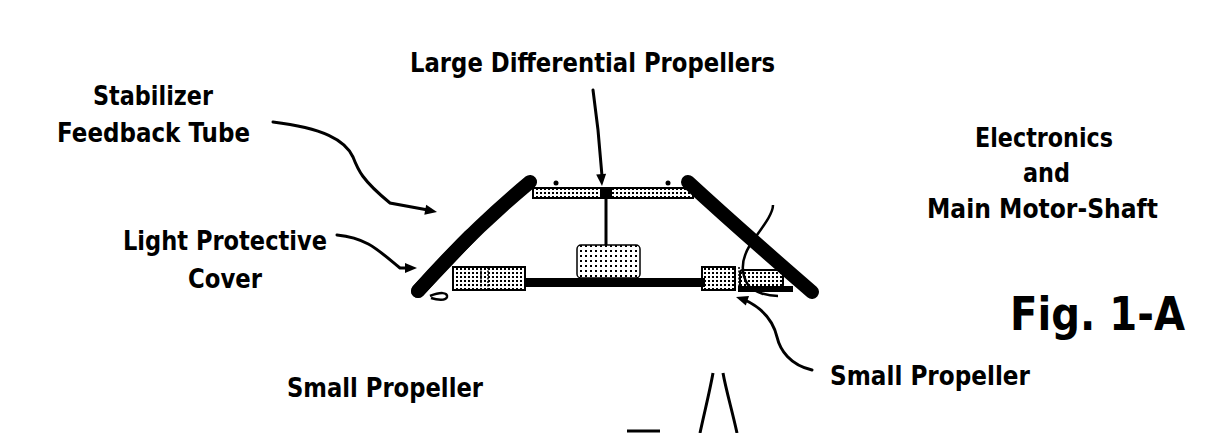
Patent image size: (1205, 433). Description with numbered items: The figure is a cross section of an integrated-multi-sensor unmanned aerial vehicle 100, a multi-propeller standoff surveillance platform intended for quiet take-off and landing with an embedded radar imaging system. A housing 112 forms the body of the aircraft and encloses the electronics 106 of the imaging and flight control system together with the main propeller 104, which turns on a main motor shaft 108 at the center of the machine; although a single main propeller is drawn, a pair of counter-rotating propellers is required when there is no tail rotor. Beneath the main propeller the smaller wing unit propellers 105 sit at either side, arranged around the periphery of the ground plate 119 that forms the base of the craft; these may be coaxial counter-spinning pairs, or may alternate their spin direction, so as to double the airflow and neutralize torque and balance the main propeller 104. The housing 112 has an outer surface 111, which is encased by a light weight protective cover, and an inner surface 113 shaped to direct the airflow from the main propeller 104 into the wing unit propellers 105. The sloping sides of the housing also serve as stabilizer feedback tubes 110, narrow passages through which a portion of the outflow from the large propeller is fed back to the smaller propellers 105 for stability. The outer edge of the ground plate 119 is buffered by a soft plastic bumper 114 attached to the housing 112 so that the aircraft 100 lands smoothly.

The unmanned aerial vehicle 100 is at (370, 83).
The main propeller 104 is at (630, 185).
The wing unit propeller 105 is at (503, 290).
The electronics 106 is at (612, 229).
The main motor shaft 108 is at (773, 205).
The stabilizer feedback tube 110 is at (456, 236).
The outer surface 111 is at (640, 255).
The housing 112 is at (410, 290).
The inner surface 113 is at (770, 292).
The soft plastic bumper 114 is at (423, 295).
The ground plate 119 is at (557, 287).